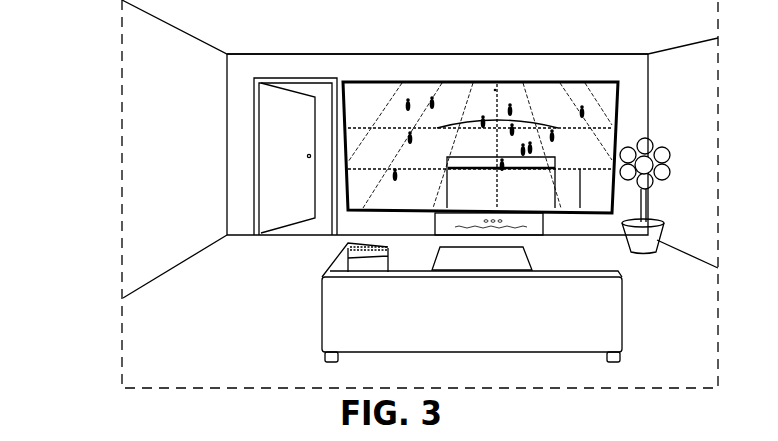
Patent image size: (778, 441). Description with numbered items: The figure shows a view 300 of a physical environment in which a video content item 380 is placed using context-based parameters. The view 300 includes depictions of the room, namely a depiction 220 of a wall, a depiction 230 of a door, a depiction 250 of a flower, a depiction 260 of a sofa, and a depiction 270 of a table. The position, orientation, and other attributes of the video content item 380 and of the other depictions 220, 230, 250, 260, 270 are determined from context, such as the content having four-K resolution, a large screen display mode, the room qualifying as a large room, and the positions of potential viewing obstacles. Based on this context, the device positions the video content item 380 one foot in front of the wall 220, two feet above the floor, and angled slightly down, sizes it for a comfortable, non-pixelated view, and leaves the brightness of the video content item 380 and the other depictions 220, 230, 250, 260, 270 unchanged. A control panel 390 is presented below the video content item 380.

The view 300 is at (78, 38).
The depiction of wall 220 is at (582, 70).
The depiction of door 230 is at (275, 100).
The depiction of flower 250 is at (670, 160).
The depiction of sofa 260 is at (622, 307).
The depiction of table 270 is at (528, 248).
The video content item 380 is at (417, 81).
The control panel 390 is at (435, 222).